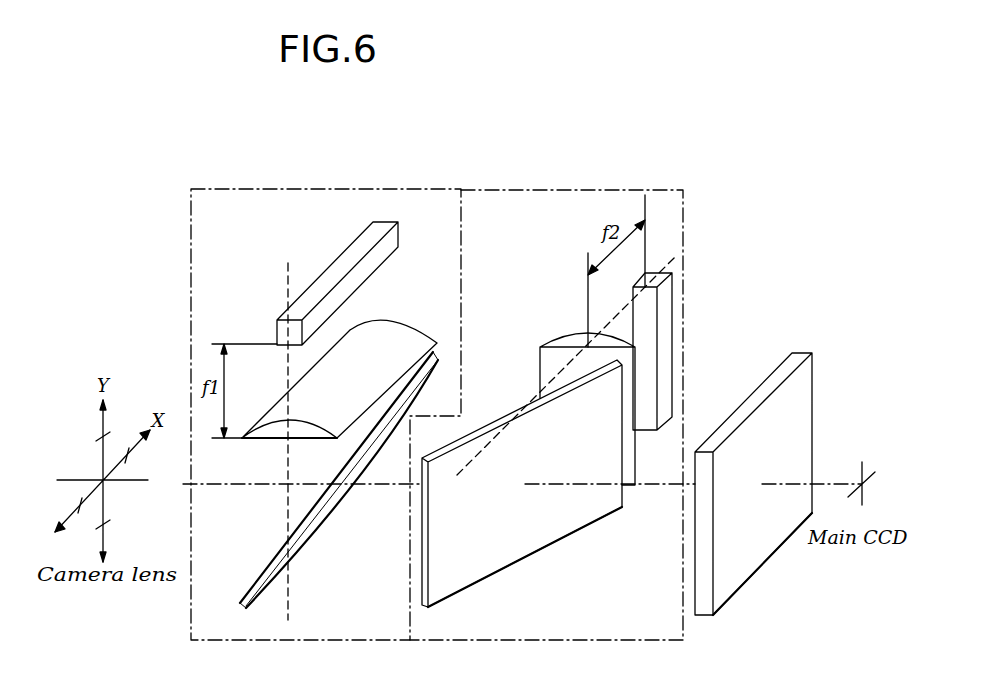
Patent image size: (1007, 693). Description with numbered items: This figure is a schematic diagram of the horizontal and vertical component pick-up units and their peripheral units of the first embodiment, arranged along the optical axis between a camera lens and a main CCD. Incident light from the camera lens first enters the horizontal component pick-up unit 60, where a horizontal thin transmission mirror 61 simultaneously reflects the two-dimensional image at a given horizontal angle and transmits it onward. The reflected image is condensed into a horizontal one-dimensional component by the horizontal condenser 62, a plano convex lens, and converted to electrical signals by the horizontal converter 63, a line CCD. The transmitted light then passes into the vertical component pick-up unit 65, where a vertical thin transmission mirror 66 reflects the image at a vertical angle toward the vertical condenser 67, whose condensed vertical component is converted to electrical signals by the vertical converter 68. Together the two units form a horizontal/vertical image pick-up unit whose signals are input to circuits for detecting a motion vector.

The horizontal component pick-up unit 60 is at (335, 189).
The horizontal thin transmission mirror 61 is at (254, 582).
The horizontal condenser 62 is at (390, 325).
The horizontal converter 63 is at (398, 226).
The vertical component pick-up unit 65 is at (575, 189).
The vertical thin transmission mirror 66 is at (438, 595).
The vertical condenser 67 is at (560, 333).
The vertical converter 68 is at (675, 322).